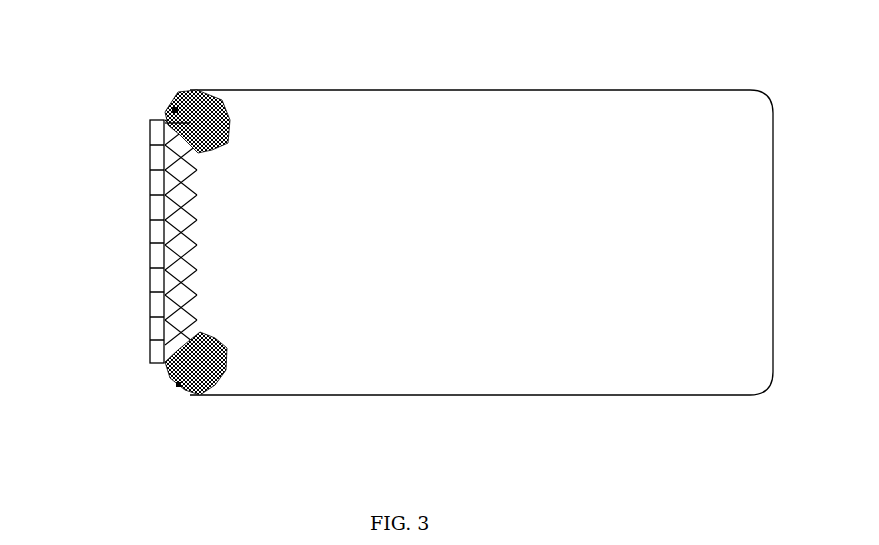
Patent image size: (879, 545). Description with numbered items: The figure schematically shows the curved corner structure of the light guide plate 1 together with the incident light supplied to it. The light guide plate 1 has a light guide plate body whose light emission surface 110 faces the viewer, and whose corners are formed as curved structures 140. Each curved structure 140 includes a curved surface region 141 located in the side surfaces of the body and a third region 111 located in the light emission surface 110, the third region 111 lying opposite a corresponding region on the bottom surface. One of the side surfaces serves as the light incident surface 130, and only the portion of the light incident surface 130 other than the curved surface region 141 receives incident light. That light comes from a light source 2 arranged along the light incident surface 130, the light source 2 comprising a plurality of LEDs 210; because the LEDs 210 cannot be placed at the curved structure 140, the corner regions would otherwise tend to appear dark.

The light guide plate 1 is at (312, 90).
The light emission surface 110 is at (443, 108).
The third region 111 is at (165, 108).
The light incident surface 130 is at (167, 322).
The curved structure 140 is at (148, 30).
The curved surface region 141 is at (167, 97).
The light source 2 is at (150, 348).
The LEDs 210 is at (155, 228).